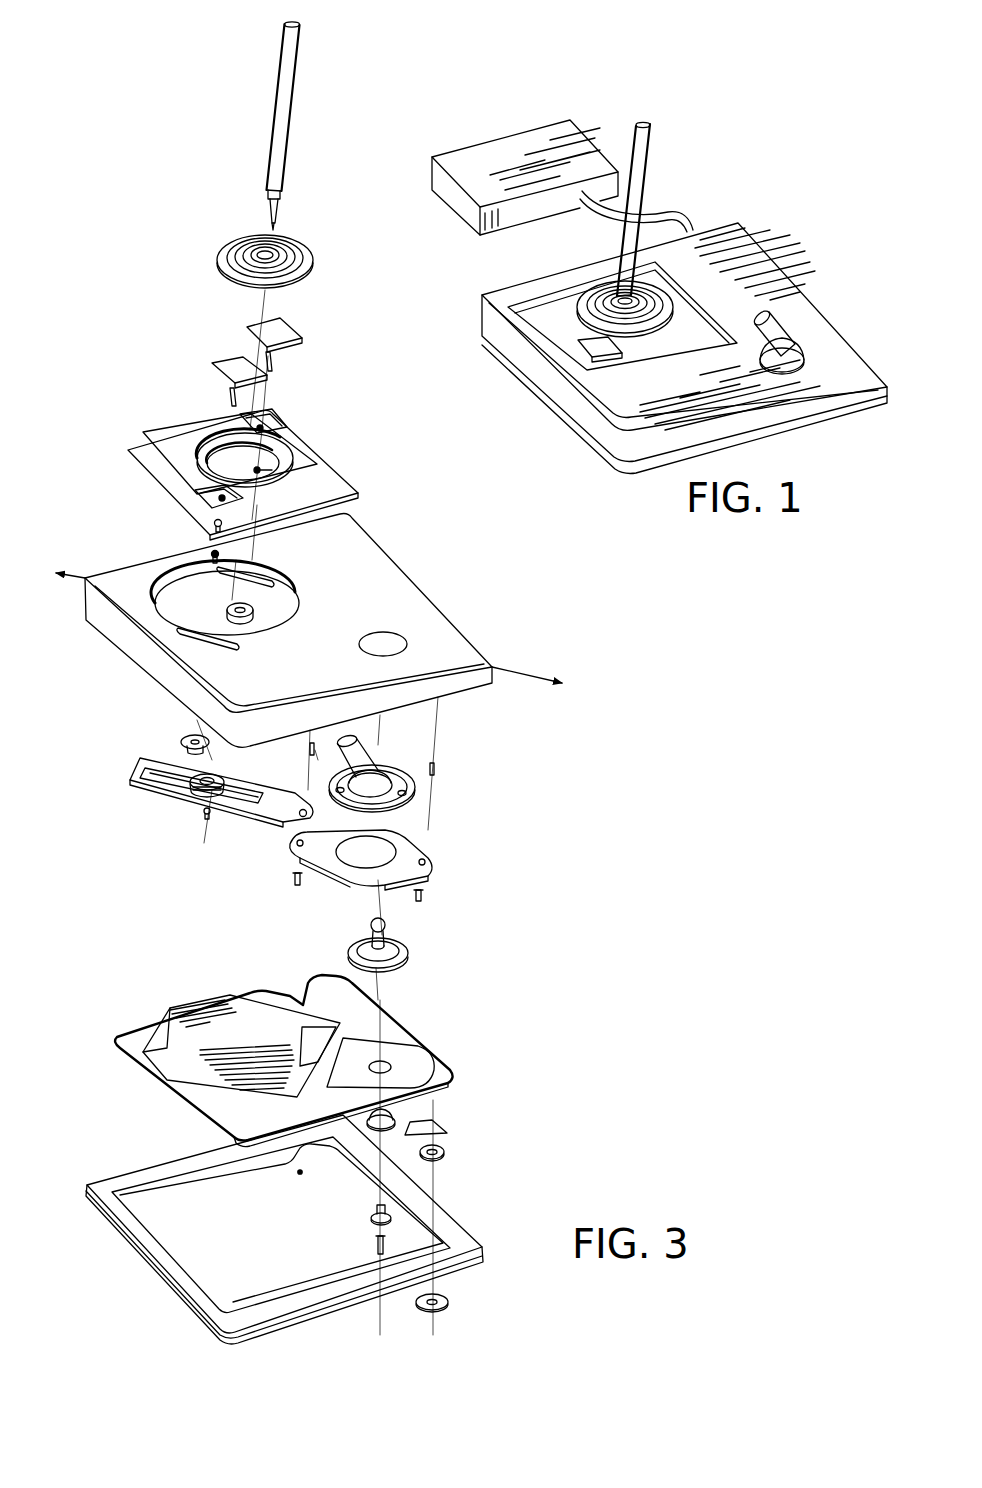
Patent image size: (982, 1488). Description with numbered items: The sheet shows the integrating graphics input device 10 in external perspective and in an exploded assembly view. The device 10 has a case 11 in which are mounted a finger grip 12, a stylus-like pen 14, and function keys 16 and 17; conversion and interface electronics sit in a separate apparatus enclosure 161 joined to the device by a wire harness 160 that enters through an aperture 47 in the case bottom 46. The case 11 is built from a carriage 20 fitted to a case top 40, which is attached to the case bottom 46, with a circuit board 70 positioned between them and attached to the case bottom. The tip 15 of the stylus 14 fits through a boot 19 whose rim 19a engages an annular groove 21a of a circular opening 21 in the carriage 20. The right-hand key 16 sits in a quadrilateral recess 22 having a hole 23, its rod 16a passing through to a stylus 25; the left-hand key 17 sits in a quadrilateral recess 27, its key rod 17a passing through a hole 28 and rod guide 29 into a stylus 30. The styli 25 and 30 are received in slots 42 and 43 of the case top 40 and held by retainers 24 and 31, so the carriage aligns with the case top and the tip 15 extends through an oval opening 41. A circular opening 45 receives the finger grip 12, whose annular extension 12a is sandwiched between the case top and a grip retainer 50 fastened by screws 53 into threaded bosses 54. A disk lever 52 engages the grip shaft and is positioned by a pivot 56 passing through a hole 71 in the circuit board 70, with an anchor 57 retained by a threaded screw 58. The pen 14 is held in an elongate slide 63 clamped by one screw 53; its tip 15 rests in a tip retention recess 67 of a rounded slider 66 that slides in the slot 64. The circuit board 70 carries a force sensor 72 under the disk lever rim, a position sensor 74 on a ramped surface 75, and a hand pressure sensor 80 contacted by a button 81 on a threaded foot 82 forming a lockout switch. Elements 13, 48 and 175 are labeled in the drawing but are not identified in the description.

In FIG. 1, the integrating graphics input device 10 is at (772, 252).
In FIG. 1, the case 11 is at (828, 332).
In FIG. 1, the finger grip 12 is at (765, 322).
In FIG. 3, the finger grip 12 is at (362, 748).
In FIG. 3, the annular extension 12a is at (395, 800).
In FIG. 3, the joystick mounting hole 13 is at (410, 792).
In FIG. 1, the stylus-like pen 14 is at (651, 156).
In FIG. 3, the stylus-like pen 14 is at (298, 90).
In FIG. 3, the tip 15 is at (268, 229).
In FIG. 1, the function key 16 is at (646, 279).
In FIG. 3, the function key 16 is at (302, 323).
In FIG. 3, the rod 16a is at (272, 358).
In FIG. 1, the function key 17 is at (600, 360).
In FIG. 3, the function key 17 is at (223, 355).
In FIG. 3, the key rod 17a is at (231, 398).
In FIG. 3, the boot 19 is at (300, 227).
In FIG. 3, the rim 19a is at (313, 277).
In FIG. 3, the carriage 20 is at (330, 458).
In FIG. 3, the circular opening 21 is at (195, 433).
In FIG. 3, the annular groove 21a is at (160, 434).
In FIG. 3, the quadrilateral recess 22 is at (283, 417).
In FIG. 3, the hole 23 is at (288, 432).
In FIG. 3, the retainer 24 is at (300, 612).
In FIG. 3, the stylus 25 is at (358, 493).
In FIG. 3, the quadrilateral recess 27 is at (197, 491).
In FIG. 3, the hole 28 is at (215, 503).
In FIG. 3, the rod guide 29 is at (213, 524).
In FIG. 3, the stylus 30 is at (210, 555).
In FIG. 3, the retainer 31 is at (182, 740).
In FIG. 3, the case top 40 is at (269, 631).
In FIG. 3, the oval opening 41 is at (153, 608).
In FIG. 3, the slot 42 is at (275, 578).
In FIG. 3, the slot 43 is at (178, 632).
In FIG. 3, the circular opening 45 is at (407, 644).
In FIG. 3, the case bottom 46 is at (310, 1229).
In FIG. 3, the aperture 47 is at (296, 1172).
In FIG. 3, the gasket 48 is at (200, 1307).
In FIG. 3, the grip retainer 50 is at (430, 840).
In FIG. 3, the disk lever 52 is at (410, 952).
In FIG. 3, the screws 53 is at (293, 881).
In FIG. 3, the threaded bosses 54 is at (308, 749).
In FIG. 3, the pivot 56 is at (396, 1120).
In FIG. 3, the anchor 57 is at (372, 1217).
In FIG. 3, the threaded screw 58 is at (376, 1250).
In FIG. 3, the elongate slide 63 is at (195, 792).
In FIG. 3, the slot 64 is at (140, 760).
In FIG. 3, the rounded slider 66 is at (200, 813).
In FIG. 3, the tip retention recess 67 is at (222, 774).
In FIG. 3, the circuit board 70 is at (288, 1061).
In FIG. 3, the hole 71 is at (391, 1067).
In FIG. 3, the force sensor 72 is at (410, 1075).
In FIG. 3, the position sensor 74 is at (205, 1033).
In FIG. 3, the ramped surface 75 is at (143, 1060).
In FIG. 3, the hand pressure sensor 80 is at (447, 1130).
In FIG. 3, the button 81 is at (445, 1152).
In FIG. 3, the threaded foot 82 is at (448, 1302).
In FIG. 1, the wire harness 160 is at (682, 216).
In FIG. 1, the apparatus enclosure 161 is at (502, 140).
In FIG. 3, the direction arrow 175 is at (535, 670).